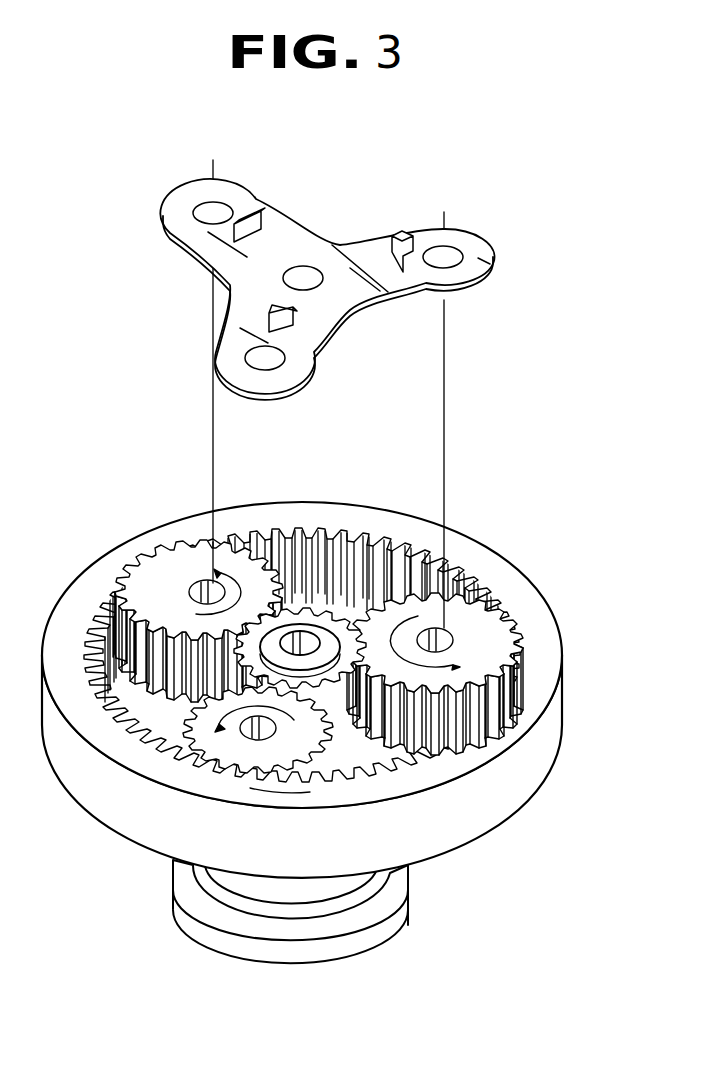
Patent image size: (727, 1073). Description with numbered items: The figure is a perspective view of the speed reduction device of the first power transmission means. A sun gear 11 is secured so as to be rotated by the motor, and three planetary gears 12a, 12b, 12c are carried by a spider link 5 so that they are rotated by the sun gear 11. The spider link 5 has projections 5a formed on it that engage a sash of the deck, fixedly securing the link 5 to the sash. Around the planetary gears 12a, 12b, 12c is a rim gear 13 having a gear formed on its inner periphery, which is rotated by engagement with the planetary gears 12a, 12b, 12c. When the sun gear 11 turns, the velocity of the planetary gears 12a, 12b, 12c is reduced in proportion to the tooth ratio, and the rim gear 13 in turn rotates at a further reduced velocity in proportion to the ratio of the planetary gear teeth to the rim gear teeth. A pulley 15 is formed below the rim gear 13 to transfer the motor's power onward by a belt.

The spider link 5 is at (368, 249).
The projections 5a is at (262, 218).
The sun gear 11 is at (334, 607).
The planetary gear 12a is at (203, 754).
The planetary gear 12b is at (483, 628).
The planetary gear 12c is at (168, 578).
The rim gear 13 is at (80, 772).
The pulley 15 is at (383, 922).